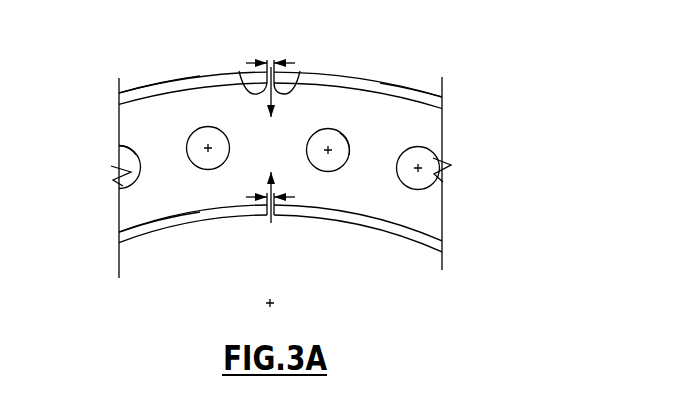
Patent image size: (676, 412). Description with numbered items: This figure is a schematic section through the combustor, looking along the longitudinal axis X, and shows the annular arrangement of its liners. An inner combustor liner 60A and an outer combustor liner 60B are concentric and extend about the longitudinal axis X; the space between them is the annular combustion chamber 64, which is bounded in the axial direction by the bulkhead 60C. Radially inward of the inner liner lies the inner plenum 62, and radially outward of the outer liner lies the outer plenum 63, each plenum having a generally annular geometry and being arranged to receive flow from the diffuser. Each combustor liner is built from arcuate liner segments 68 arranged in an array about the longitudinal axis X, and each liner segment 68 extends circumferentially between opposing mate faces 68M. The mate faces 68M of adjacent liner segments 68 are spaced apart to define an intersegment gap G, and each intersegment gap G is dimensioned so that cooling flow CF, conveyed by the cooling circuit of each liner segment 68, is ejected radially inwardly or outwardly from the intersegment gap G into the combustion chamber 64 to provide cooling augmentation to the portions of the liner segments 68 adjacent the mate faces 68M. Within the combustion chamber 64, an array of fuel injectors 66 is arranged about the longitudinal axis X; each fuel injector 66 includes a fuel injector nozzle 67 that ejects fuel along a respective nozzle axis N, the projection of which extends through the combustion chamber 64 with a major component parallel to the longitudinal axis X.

The inner combustor liner 60A is at (156, 221).
The outer combustor liner 60B is at (153, 84).
The bulkhead 60C is at (432, 133).
The inner plenum 62 is at (274, 216).
The outer plenum 63 is at (285, 37).
The combustion chamber 64 is at (285, 167).
The fuel injector 66 is at (205, 127).
The fuel injector nozzle 67 is at (134, 152).
The liner segment 68 is at (135, 90).
The mate face 68M is at (247, 88).
The cooling flow CF is at (269, 115).
The intersegment gap G is at (293, 63).
The nozzle axis N is at (208, 150).
The longitudinal axis X is at (276, 300).